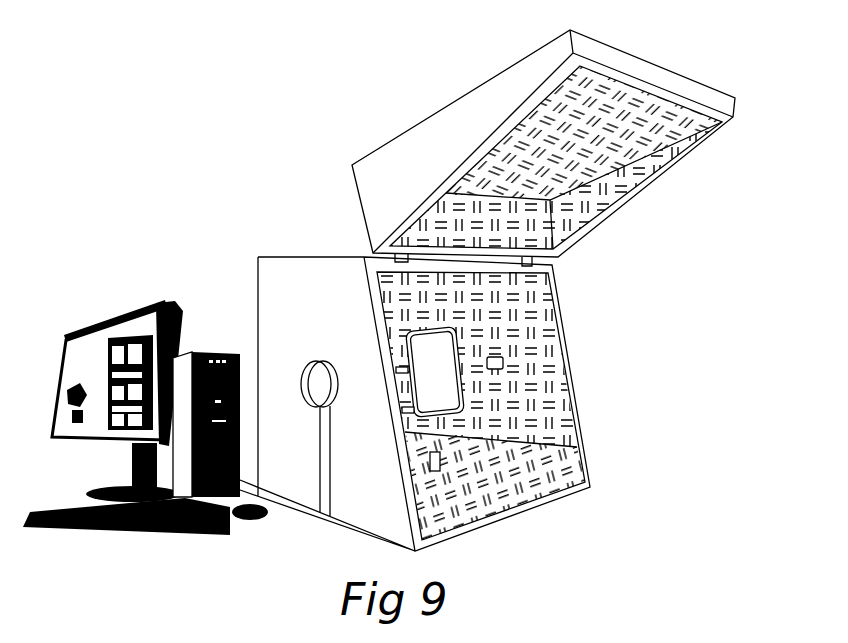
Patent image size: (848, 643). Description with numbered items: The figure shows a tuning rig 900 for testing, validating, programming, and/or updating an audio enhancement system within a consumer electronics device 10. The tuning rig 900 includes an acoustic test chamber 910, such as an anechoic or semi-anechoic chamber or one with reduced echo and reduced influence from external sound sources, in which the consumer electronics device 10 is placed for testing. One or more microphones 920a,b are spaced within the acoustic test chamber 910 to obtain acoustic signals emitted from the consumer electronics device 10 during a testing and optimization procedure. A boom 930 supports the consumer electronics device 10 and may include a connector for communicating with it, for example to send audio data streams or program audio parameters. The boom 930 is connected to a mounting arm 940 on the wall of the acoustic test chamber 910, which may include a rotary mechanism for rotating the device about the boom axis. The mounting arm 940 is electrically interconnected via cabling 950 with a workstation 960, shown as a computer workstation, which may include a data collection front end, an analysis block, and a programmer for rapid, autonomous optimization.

The consumer electronics device 10 is at (455, 346).
The tuning rig 900 is at (663, 400).
The acoustic test chamber 910 is at (535, 480).
The microphones 920a,b is at (440, 463).
The boom 930 is at (396, 368).
The mounting arm 940 is at (306, 368).
The cabling 950 is at (315, 508).
The workstation 960 is at (88, 313).